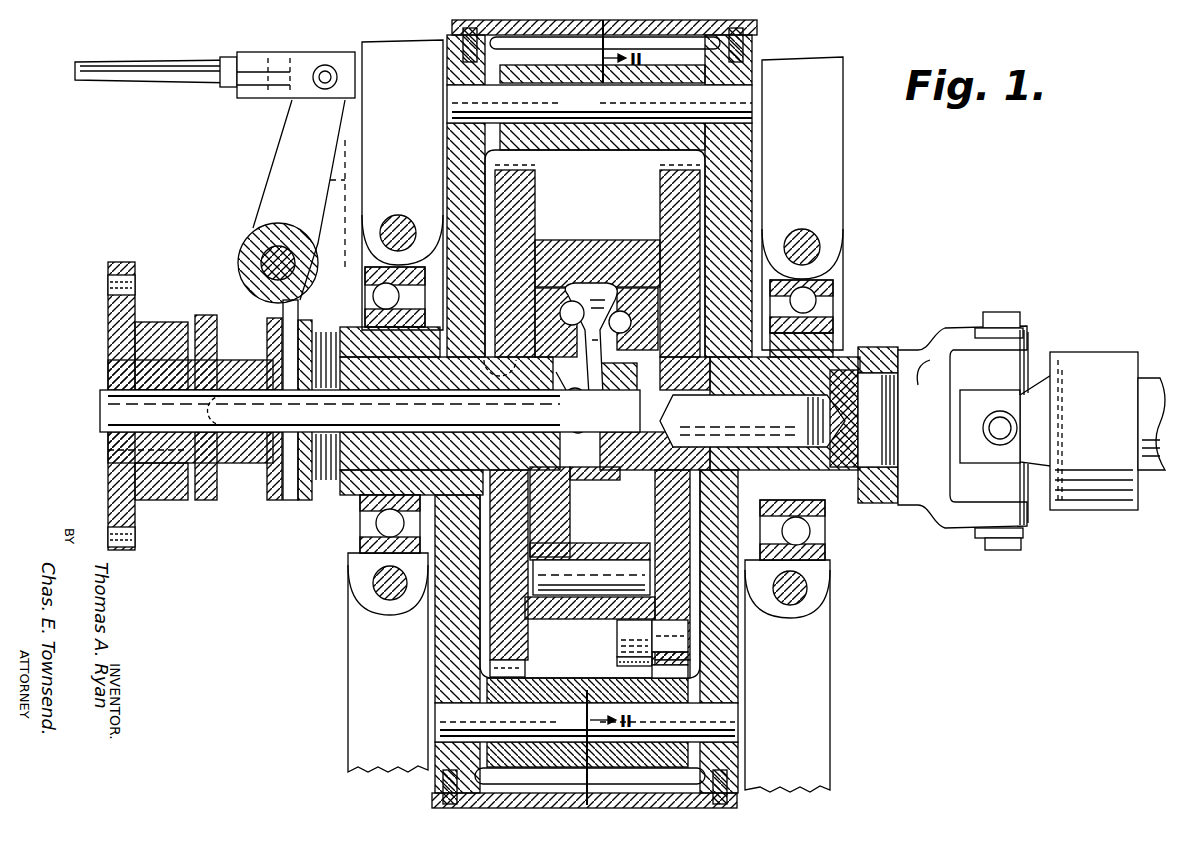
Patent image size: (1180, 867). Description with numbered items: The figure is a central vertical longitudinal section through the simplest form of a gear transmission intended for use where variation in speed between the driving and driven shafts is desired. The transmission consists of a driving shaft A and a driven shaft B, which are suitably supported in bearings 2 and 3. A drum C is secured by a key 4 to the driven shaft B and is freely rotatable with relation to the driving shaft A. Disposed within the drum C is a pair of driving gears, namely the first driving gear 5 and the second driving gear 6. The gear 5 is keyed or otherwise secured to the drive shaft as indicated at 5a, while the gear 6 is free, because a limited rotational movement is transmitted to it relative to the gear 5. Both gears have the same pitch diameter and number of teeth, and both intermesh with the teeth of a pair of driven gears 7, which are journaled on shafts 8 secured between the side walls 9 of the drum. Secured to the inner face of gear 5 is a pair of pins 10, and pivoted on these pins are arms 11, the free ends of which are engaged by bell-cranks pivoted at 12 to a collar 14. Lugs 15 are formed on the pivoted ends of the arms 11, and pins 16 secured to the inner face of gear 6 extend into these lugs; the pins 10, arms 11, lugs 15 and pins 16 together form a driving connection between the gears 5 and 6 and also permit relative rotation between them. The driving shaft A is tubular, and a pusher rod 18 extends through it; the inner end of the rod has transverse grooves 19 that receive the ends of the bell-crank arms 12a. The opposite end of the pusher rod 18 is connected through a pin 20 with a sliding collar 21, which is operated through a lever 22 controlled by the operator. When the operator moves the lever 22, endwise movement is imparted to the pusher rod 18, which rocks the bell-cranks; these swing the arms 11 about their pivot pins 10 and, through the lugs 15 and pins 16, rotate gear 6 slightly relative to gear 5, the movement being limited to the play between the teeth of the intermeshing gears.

The bearing 2 is at (360, 540).
The bearing 3 is at (828, 547).
The key 4 is at (740, 372).
The first driving gear 5 is at (536, 200).
The key of gear 5 5a is at (492, 374).
The second driving gear 6 is at (660, 188).
The driven gears 7 is at (570, 158).
The shafts 8 is at (582, 106).
The side walls of the drum 9 is at (455, 152).
The pins 10 is at (580, 586).
The arms 11 is at (617, 246).
The bell-crank pivot 12 is at (581, 298).
The bell-crank arms 12a is at (562, 382).
The collar 14 is at (562, 505).
The lugs 15 is at (616, 664).
The pins 16 is at (617, 634).
The pusher rod 18 is at (378, 408).
The transverse grooves 19 is at (606, 470).
The pin 20 is at (285, 502).
The sliding collar 21 is at (210, 502).
The lever 22 is at (282, 170).
The driving shaft A is at (106, 437).
The driven shaft B is at (851, 364).
The drum C is at (760, 40).